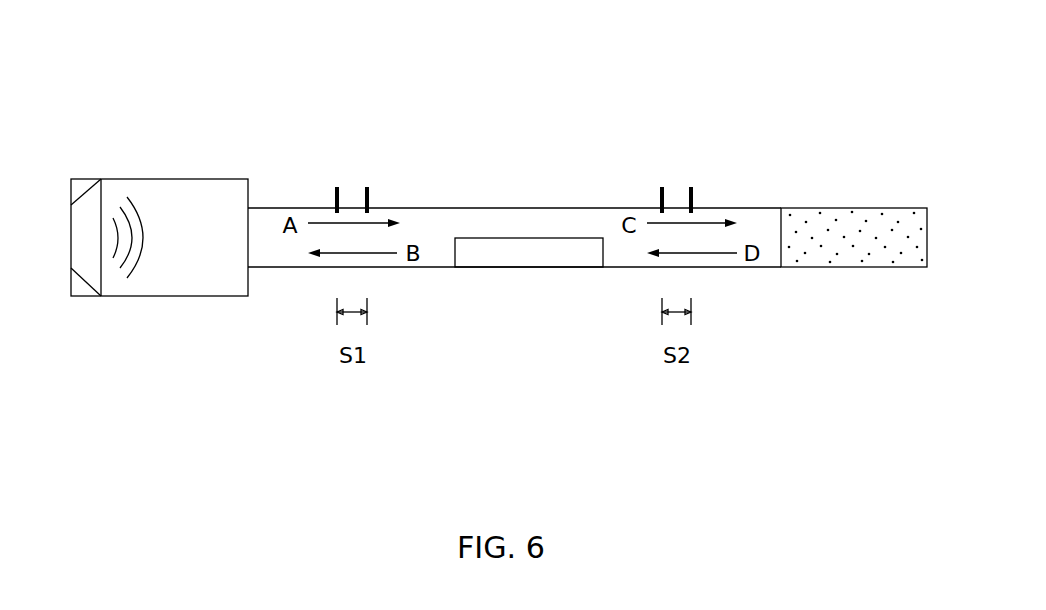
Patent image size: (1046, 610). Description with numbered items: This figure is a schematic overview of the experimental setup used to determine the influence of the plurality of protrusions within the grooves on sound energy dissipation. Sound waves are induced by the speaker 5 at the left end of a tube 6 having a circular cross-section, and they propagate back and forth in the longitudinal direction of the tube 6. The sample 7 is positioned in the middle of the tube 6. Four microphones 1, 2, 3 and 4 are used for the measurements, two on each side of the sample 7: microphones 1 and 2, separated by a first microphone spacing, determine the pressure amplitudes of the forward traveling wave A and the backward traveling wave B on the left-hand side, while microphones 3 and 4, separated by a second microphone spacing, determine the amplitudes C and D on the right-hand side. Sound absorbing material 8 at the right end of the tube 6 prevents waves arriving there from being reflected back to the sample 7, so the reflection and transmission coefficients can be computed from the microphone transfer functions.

The microphone 1 is at (338, 178).
The microphone 2 is at (366, 178).
The microphone 3 is at (662, 178).
The microphone 4 is at (691, 178).
The speaker 5 is at (80, 263).
The tube 6 is at (513, 222).
The sample 7 is at (522, 258).
The sound absorbing material 8 is at (855, 247).